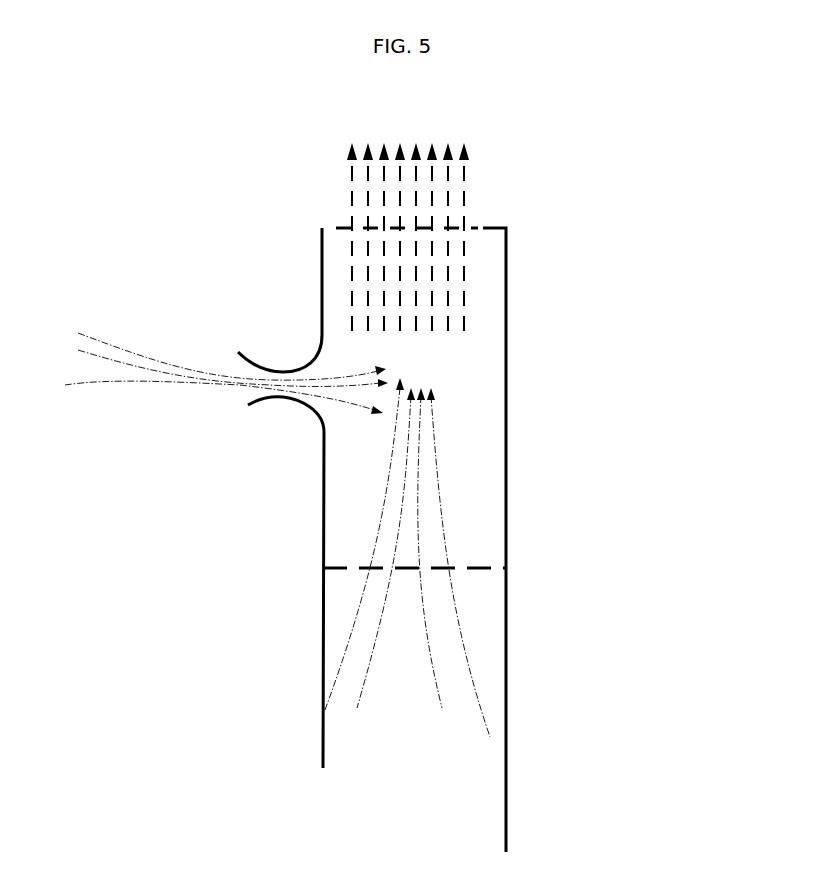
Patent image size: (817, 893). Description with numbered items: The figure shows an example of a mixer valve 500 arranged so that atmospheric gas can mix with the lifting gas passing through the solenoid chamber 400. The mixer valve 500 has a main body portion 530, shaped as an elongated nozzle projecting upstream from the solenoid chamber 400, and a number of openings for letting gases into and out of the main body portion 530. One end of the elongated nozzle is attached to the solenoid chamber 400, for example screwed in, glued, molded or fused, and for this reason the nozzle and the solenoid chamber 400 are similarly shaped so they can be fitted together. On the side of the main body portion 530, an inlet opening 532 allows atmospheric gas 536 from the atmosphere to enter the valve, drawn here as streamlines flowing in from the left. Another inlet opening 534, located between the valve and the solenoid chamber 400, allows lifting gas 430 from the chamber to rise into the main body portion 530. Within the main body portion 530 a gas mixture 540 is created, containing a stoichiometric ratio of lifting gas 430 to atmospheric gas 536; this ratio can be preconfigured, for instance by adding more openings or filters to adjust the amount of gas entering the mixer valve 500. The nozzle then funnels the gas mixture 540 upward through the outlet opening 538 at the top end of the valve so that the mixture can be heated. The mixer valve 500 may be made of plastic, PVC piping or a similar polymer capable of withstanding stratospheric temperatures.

The mixer valve 500 is at (790, 58).
The main body portion 530 is at (507, 355).
The outlet opening 538 is at (483, 227).
The gas mixture 540 is at (350, 185).
The atmospheric gas 536 is at (188, 380).
The inlet opening 532 is at (246, 398).
The inlet opening 534 is at (353, 568).
The solenoid chamber 400 is at (507, 598).
The lifting gas 430 is at (462, 640).